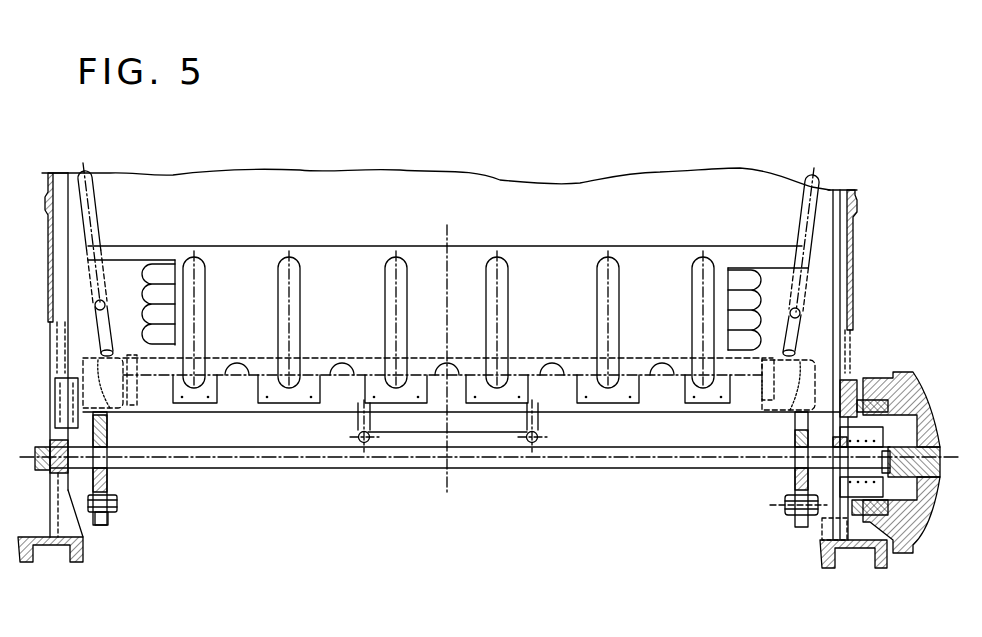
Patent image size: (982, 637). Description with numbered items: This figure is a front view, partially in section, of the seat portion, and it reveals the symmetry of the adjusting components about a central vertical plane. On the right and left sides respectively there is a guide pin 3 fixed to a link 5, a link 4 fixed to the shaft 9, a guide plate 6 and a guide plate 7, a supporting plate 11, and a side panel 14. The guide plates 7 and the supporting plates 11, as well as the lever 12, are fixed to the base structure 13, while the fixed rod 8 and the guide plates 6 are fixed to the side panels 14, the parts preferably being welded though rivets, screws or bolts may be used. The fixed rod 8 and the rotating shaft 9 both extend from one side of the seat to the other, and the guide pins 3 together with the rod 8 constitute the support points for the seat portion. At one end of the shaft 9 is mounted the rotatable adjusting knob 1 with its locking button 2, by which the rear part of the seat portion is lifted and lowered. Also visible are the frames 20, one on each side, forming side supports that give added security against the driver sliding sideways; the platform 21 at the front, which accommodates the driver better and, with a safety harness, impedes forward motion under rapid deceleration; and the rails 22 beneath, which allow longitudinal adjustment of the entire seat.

The adjusting knob 1 is at (902, 382).
The locking button 2 is at (940, 462).
The guide pin 3 is at (78, 410).
The link 4 is at (108, 478).
The link 5 is at (95, 487).
The guide plate 6 is at (58, 388).
The guide plate 7 is at (73, 438).
The rod 8 is at (107, 410).
The shaft 9 is at (746, 467).
The supporting plate 11 is at (131, 366).
The lever 12 is at (417, 437).
The base structure 13 is at (698, 407).
The side panel 14 is at (48, 302).
The frame 20 is at (96, 220).
The platform 21 is at (345, 262).
The rail 22 is at (31, 558).